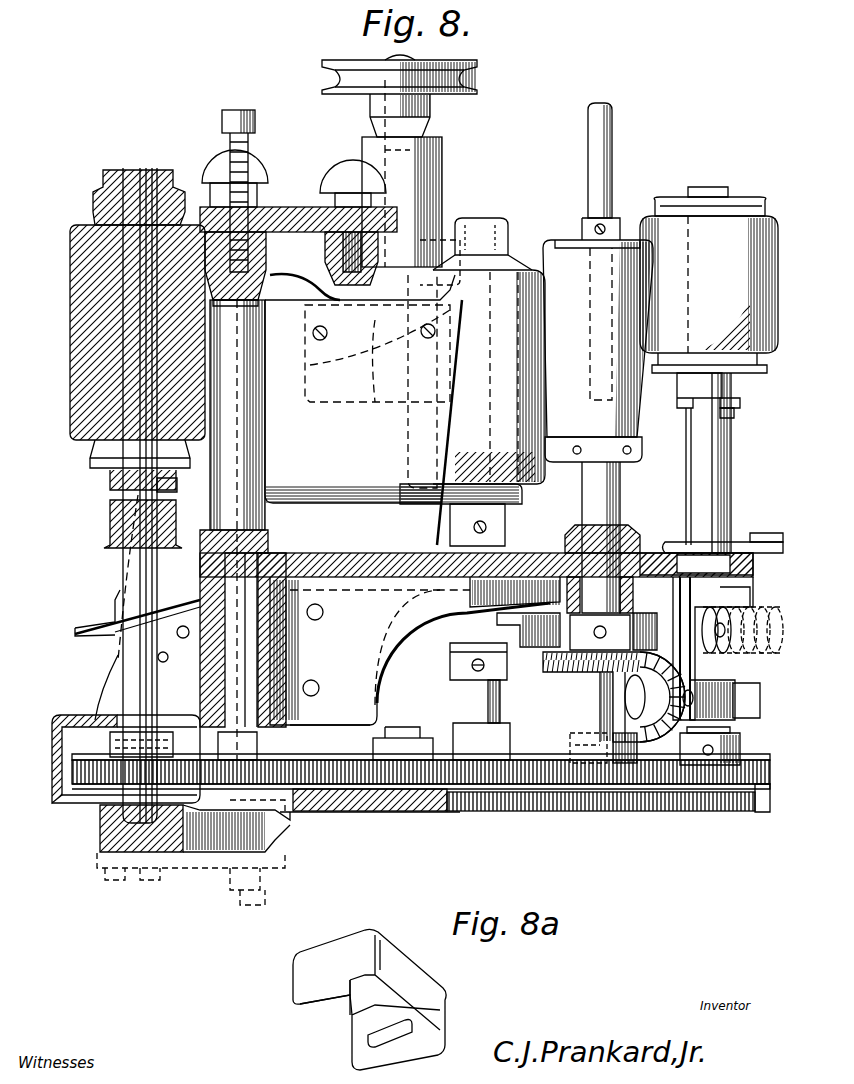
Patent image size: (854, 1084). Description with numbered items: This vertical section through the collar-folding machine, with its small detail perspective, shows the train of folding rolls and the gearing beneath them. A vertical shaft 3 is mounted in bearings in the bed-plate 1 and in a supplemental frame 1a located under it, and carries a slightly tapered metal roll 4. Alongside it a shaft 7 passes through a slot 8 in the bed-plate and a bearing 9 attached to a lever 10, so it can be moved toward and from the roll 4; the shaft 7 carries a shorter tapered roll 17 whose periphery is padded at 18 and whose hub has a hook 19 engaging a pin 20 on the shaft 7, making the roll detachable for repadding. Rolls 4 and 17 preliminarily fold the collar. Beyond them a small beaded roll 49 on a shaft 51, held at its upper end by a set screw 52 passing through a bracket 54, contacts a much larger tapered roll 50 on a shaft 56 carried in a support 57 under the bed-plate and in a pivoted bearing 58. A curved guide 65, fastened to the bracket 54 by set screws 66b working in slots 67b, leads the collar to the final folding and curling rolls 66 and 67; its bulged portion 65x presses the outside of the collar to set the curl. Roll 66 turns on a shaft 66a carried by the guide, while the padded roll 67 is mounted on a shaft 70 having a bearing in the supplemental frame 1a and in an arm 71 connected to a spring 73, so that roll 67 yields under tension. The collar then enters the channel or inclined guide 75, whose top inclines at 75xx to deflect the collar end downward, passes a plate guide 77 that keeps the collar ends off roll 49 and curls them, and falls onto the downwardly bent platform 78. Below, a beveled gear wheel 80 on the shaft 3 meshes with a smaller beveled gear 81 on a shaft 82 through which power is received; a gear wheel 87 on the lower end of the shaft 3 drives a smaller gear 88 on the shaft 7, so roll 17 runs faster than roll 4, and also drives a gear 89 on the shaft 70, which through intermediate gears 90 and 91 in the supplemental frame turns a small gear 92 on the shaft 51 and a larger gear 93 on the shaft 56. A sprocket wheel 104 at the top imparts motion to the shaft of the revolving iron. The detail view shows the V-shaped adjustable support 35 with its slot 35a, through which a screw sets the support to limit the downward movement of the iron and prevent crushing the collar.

In FIG. 8, the bed-plate 1 is at (527, 555).
In FIG. 8, the supplemental frame 1a is at (395, 812).
In FIG. 8, the vertical shaft 3 is at (612, 505).
In FIG. 8, the metal roll 4 is at (640, 450).
In FIG. 8, the shaft 7 is at (728, 478).
In FIG. 8, the slot 8 is at (672, 545).
In FIG. 8, the bearing 9 is at (742, 542).
In FIG. 8, the lever 10 is at (769, 525).
In FIG. 8, the tapered roll 17 is at (722, 385).
In FIG. 8, the padding 18 is at (709, 280).
In FIG. 8, the hook 19 is at (734, 414).
In FIG. 8, the pin 20 is at (740, 403).
In FIG. 8A, the adjustable support 35 is at (420, 1012).
In FIG. 8A, the slot 35a is at (408, 1035).
In FIG. 8, the intermediate folding and curling roll 49 is at (215, 470).
In FIG. 8, the intermediate folding and curling roll 50 is at (80, 300).
In FIG. 8, the shaft 51 is at (266, 552).
In FIG. 8, the set screw 52 is at (240, 165).
In FIG. 8, the bracket 54 is at (315, 208).
In FIG. 8, the shaft 56 is at (125, 495).
In FIG. 8, the support 57 is at (160, 855).
In FIG. 8, the bearing 58 is at (150, 535).
In FIG. 8, the curved guide 65 is at (270, 262).
In FIG. 8, the bulged or projecting portion 65x is at (320, 285).
In FIG. 8, the final folding and curling roll 66 is at (378, 405).
In FIG. 8, the shaft 66a is at (425, 62).
In FIG. 8, the set screws 66b is at (362, 170).
In FIG. 8, the final folding and curling roll 67 is at (472, 408).
In FIG. 8, the slots 67b is at (345, 190).
In FIG. 8, the shaft 70 is at (490, 228).
In FIG. 8, the arm 71 is at (527, 640).
In FIG. 8, the spring 73 is at (735, 653).
In FIG. 8, the channel or inclined guide 75 is at (325, 402).
In FIG. 8, the inclined top 75xx is at (392, 350).
In FIG. 8, the plate guide 77 is at (363, 410).
In FIG. 8, the platform 78 is at (75, 628).
In FIG. 8, the beveled gear wheel 80 is at (610, 680).
In FIG. 8, the beveled gear wheel 81 is at (622, 700).
In FIG. 8, the shaft 82 is at (738, 712).
In FIG. 8, the gear wheel 87 is at (575, 812).
In FIG. 8, the gear wheel 88 is at (770, 812).
In FIG. 8, the gear wheel 89 is at (468, 790).
In FIG. 8, the intermediate gear 90 is at (373, 748).
In FIG. 8, the intermediate gear 91 is at (315, 755).
In FIG. 8, the gear 92 is at (235, 775).
In FIG. 8, the gear 93 is at (60, 795).
In FIG. 8, the sprocket wheel 104 is at (478, 72).